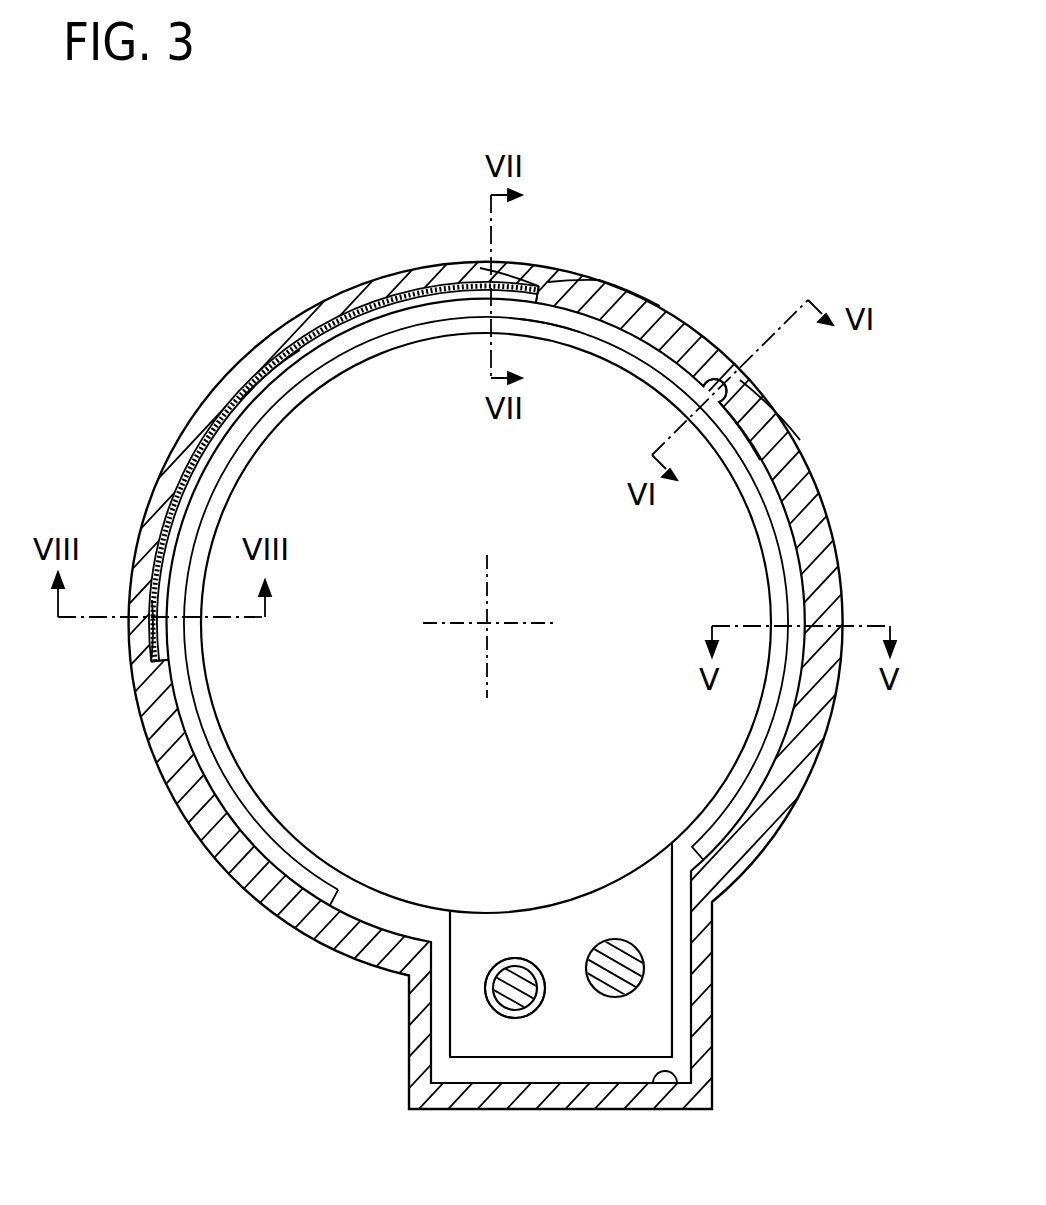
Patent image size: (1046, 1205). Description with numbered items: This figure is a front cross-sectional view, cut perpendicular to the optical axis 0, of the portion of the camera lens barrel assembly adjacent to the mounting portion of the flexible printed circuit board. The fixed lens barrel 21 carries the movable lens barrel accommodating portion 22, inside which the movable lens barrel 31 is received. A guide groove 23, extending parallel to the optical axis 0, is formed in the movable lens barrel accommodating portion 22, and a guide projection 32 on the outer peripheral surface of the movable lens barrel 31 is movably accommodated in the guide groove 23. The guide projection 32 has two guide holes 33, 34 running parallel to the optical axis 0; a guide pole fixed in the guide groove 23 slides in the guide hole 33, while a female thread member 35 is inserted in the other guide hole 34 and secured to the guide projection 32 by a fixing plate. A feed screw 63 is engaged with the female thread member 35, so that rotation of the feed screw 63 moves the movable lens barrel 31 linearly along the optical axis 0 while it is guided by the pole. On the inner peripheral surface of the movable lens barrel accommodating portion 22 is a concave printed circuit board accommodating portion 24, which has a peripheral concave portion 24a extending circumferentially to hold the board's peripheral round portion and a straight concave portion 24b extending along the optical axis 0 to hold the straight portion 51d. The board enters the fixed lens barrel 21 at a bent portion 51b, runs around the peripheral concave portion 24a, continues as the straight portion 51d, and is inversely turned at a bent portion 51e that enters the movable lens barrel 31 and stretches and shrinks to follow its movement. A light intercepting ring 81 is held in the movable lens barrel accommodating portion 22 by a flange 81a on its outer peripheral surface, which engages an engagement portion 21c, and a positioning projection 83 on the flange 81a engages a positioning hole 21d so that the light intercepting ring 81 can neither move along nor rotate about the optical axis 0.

The fixed lens barrel 21 is at (695, 342).
The engagement portion 21c is at (775, 492).
The positioning hole 21d is at (703, 398).
The movable lens barrel accommodating portion 22 is at (704, 845).
The guide groove 23 is at (660, 1082).
The printed circuit board accommodating portion 24 is at (450, 290).
The peripheral concave portion 24a is at (285, 350).
The straight concave portion 24b is at (542, 300).
The movable lens barrel 31 is at (372, 878).
The guide projection 32 is at (670, 1020).
The guide hole 33 is at (640, 963).
The guide hole 34 is at (512, 1027).
The female thread member 35 is at (515, 988).
The bent portion 51b is at (150, 645).
The straight portion 51d is at (523, 275).
The bent portion 51e is at (358, 302).
The feed screw 63 is at (505, 1005).
The light intercepting ring 81 is at (570, 330).
The flange 81a is at (620, 340).
The positioning projection 83 is at (723, 404).
The optical axis 0 is at (488, 622).